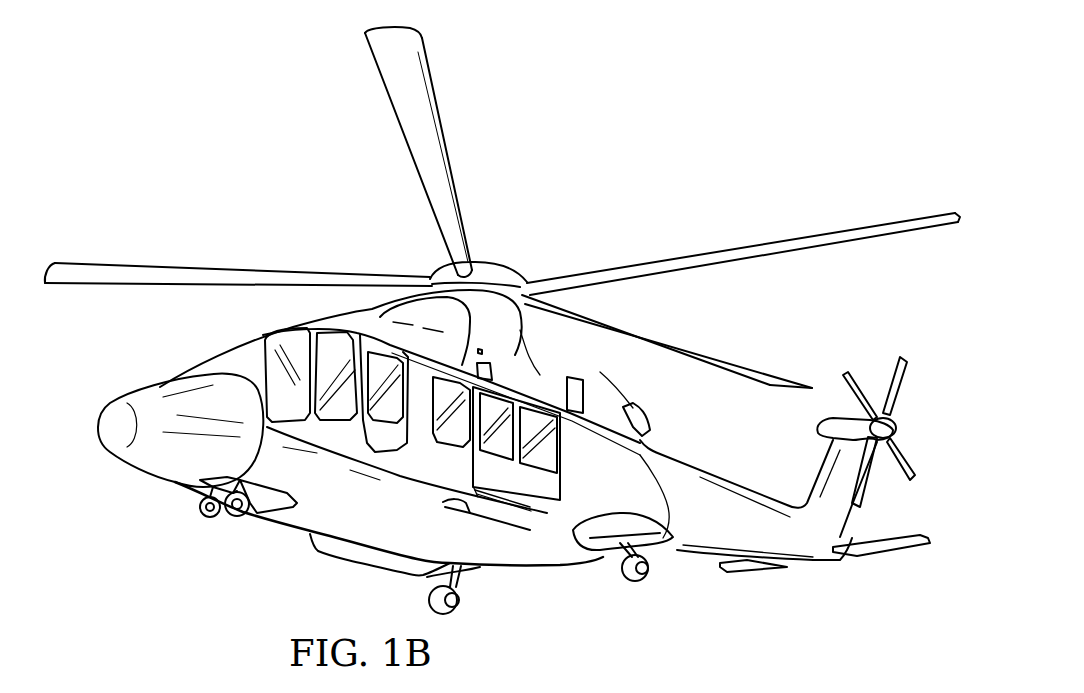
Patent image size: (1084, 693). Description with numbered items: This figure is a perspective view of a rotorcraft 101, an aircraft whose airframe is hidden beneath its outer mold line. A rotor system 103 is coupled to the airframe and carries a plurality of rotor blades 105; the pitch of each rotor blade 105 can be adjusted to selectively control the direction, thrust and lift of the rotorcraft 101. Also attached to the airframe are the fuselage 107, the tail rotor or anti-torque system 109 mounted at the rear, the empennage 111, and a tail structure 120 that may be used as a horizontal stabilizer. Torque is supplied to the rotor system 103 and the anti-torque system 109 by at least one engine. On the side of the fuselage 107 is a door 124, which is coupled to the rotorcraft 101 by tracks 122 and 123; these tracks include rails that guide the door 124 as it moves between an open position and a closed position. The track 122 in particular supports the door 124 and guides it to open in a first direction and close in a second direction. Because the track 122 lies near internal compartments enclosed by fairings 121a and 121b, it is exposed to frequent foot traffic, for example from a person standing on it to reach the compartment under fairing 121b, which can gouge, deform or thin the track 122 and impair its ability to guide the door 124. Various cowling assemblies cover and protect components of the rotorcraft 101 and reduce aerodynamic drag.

The rotorcraft 101 is at (268, 126).
The rotor system 103 is at (509, 242).
The rotor blade 105 is at (725, 252).
The fuselage 107 is at (310, 515).
The tail rotor or anti-torque system 109 is at (879, 348).
The empennage 111 is at (702, 543).
The tail structure 120 is at (890, 548).
The fairing 121a is at (418, 332).
The fairing 121b is at (542, 380).
The track 122 is at (610, 428).
The track 123 is at (479, 505).
The door 124 is at (528, 517).